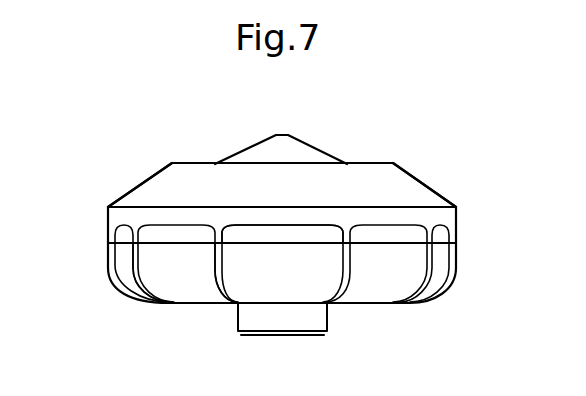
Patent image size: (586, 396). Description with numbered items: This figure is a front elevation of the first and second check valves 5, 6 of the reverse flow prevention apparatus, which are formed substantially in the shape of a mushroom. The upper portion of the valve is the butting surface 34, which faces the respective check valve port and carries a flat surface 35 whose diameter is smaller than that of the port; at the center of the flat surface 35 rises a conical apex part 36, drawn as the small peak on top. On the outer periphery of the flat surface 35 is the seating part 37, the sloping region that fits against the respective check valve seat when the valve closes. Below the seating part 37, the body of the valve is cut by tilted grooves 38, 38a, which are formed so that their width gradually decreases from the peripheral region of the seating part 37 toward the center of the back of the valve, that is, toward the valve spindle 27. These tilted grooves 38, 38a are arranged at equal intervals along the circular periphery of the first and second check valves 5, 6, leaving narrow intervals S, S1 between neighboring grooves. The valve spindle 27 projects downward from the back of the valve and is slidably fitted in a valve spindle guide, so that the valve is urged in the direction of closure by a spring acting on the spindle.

The first check valve 5 is at (346, 219).
The second check valve 6 is at (585, 161).
The valve spindle 27 is at (327, 318).
The butting surface 34 is at (377, 163).
The flat surface 35 is at (190, 163).
The apex part 36 is at (290, 150).
The seating part 37 is at (150, 173).
The tilted groove 38 is at (177, 265).
The tilted groove 38a is at (260, 274).
The interval S is at (133, 265).
The interval S1 is at (212, 272).